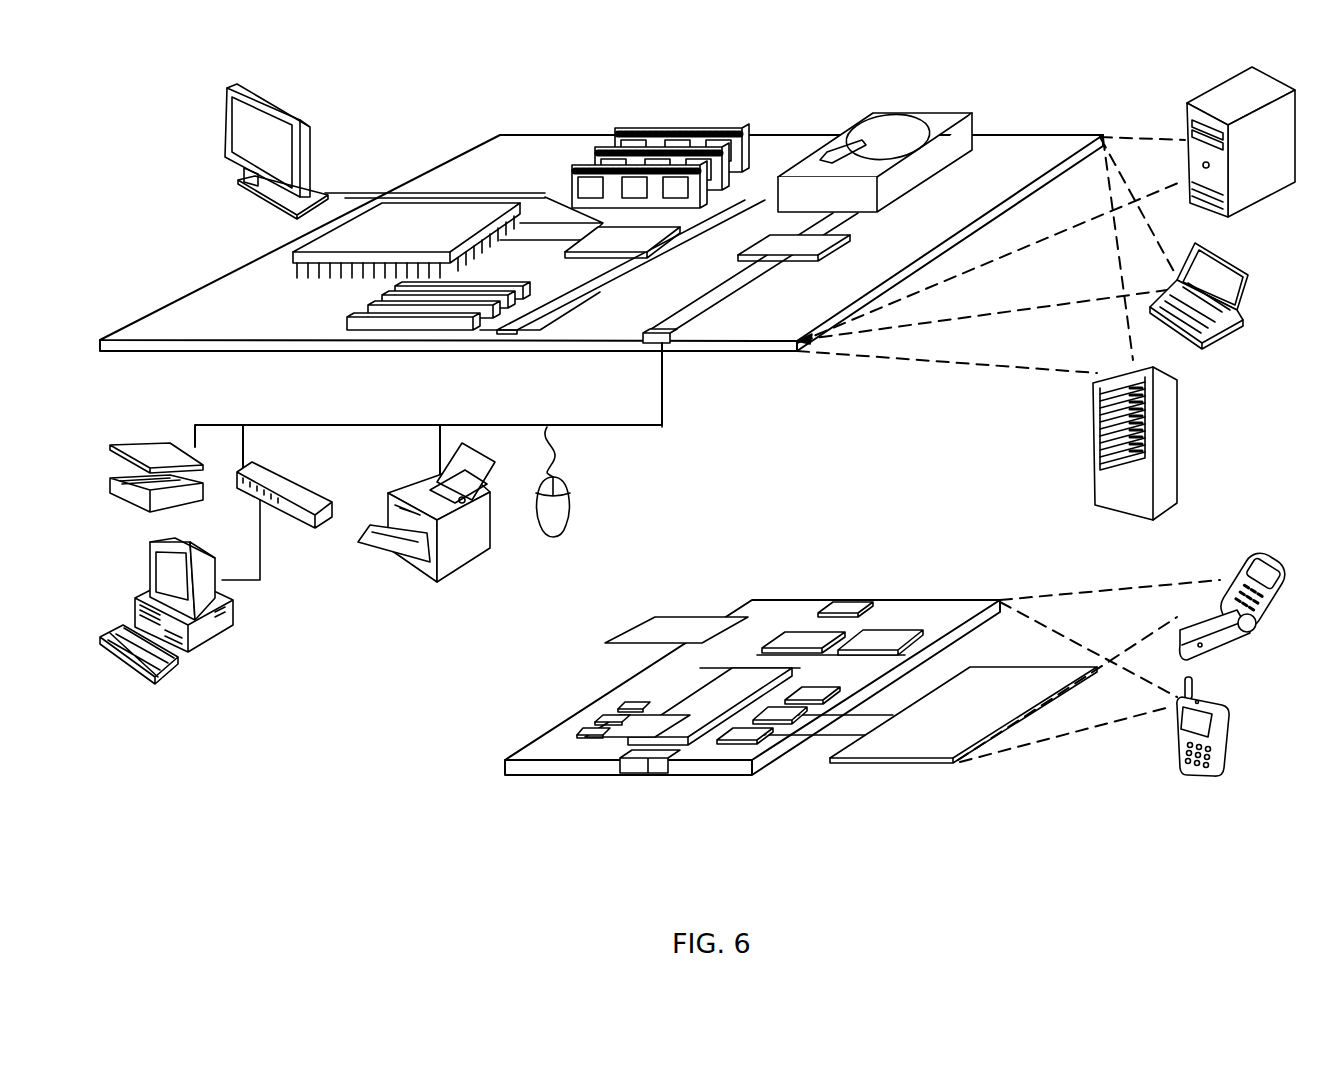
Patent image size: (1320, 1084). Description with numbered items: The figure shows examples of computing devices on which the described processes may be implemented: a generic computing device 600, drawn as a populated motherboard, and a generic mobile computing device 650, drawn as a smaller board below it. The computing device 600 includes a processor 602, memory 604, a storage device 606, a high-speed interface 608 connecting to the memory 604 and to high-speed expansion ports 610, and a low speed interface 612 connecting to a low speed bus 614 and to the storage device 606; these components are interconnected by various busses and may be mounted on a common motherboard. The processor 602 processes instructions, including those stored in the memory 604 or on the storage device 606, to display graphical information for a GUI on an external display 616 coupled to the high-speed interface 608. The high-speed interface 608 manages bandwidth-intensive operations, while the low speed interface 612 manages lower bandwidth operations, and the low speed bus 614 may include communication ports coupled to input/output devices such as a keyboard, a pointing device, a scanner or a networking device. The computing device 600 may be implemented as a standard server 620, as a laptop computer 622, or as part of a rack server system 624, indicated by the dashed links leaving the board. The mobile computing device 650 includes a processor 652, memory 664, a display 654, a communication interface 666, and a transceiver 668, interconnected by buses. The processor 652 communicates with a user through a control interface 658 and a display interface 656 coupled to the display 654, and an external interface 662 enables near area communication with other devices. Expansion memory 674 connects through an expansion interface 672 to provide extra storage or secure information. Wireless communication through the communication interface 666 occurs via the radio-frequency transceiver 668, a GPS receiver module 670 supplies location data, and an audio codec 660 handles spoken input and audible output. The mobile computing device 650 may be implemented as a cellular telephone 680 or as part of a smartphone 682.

The computing device 600 is at (418, 100).
The processor 602 is at (297, 255).
The memory 604 is at (628, 127).
The storage device 606 is at (876, 118).
The high-speed interface 608 is at (597, 240).
The high-speed expansion ports 610 is at (368, 313).
The low speed interface 612 is at (777, 242).
The low speed bus 614 is at (673, 343).
The display 616 is at (228, 90).
The standard server 620 is at (1187, 123).
The laptop computer 622 is at (1248, 273).
The rack server system 624 is at (1093, 468).
The mobile computing device 650 is at (478, 778).
The processor 652 is at (683, 728).
The display 654 is at (922, 747).
The display interface 656 is at (752, 737).
The control interface 658 is at (787, 715).
The audio codec 660 is at (810, 692).
The external interface 662 is at (647, 767).
The memory 664 is at (592, 718).
The communication interface 666 is at (803, 637).
The transceiver 668 is at (883, 637).
The GPS receiver module 670 is at (848, 607).
The expansion interface 672 is at (720, 612).
The expansion memory 674 is at (657, 612).
The cellular telephone 680 is at (1236, 560).
The smartphone 682 is at (1176, 732).